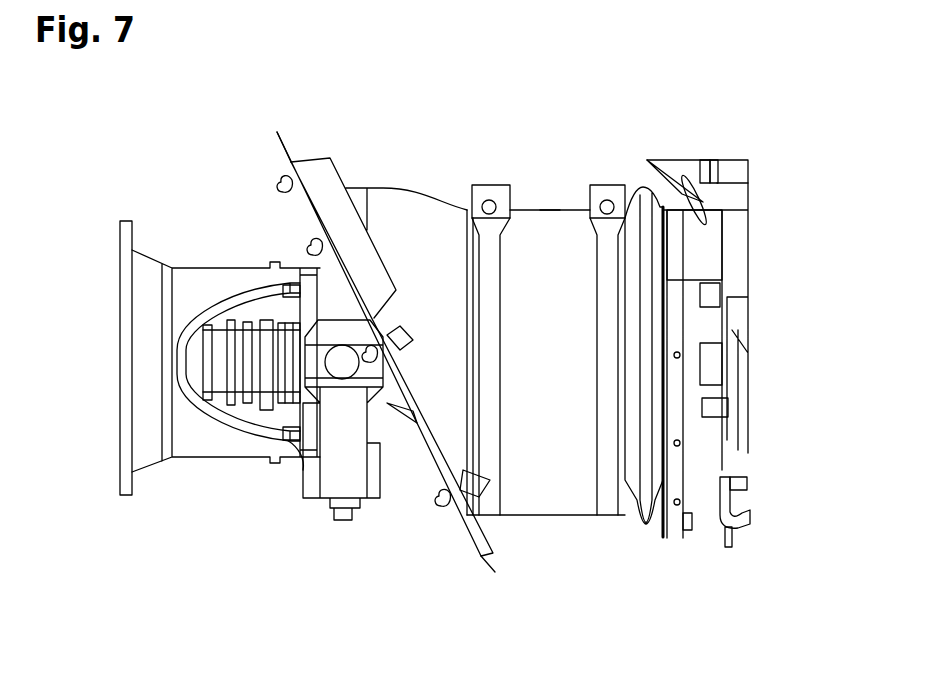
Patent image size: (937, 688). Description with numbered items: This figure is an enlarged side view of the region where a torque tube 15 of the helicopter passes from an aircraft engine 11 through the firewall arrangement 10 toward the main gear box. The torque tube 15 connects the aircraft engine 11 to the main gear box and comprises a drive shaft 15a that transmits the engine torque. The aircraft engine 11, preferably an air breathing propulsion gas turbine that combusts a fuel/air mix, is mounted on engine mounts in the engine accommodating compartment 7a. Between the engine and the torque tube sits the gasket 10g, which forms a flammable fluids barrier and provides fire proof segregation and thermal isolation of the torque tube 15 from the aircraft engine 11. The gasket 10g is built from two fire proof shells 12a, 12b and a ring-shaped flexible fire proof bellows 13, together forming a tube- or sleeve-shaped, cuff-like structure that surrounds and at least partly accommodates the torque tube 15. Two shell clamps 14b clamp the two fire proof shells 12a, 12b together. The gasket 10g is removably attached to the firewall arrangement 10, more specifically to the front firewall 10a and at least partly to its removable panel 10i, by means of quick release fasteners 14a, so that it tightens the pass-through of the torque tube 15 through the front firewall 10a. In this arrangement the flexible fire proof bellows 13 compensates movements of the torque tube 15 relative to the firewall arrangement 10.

The engine accommodating compartment 7a is at (570, 145).
The firewall arrangement 10 is at (455, 540).
The front firewall 10a is at (488, 558).
The removable panel 10i is at (286, 146).
The gasket 10g is at (532, 172).
The aircraft engine 11 is at (733, 172).
The fire proof shell 12a is at (572, 480).
The fire proof shell 12b is at (404, 172).
The ring-shaped flexible fire proof bellows 13 is at (642, 248).
The quick release fasteners 14a is at (493, 494).
The shell clamps 14b is at (490, 185).
The torque tube 15 is at (203, 285).
The drive shaft 15a is at (303, 468).